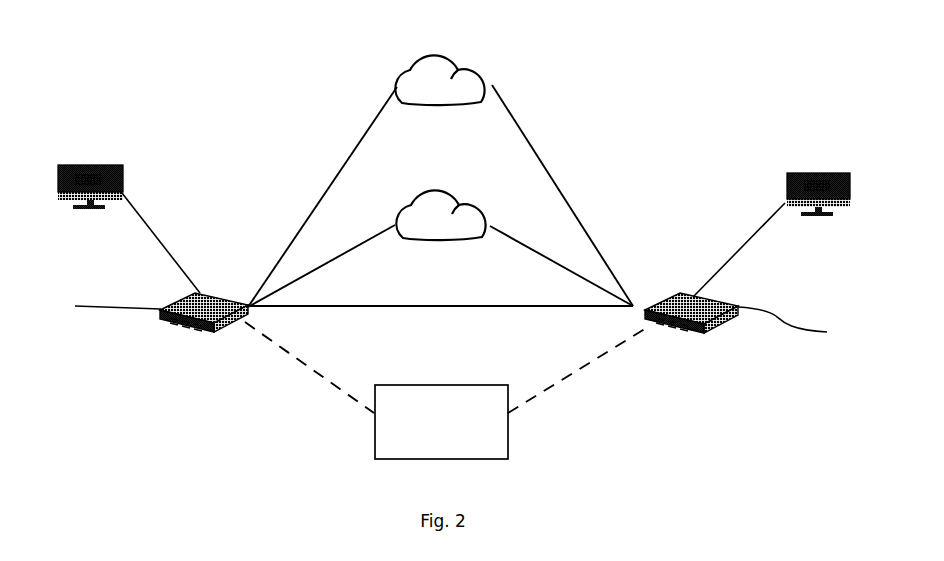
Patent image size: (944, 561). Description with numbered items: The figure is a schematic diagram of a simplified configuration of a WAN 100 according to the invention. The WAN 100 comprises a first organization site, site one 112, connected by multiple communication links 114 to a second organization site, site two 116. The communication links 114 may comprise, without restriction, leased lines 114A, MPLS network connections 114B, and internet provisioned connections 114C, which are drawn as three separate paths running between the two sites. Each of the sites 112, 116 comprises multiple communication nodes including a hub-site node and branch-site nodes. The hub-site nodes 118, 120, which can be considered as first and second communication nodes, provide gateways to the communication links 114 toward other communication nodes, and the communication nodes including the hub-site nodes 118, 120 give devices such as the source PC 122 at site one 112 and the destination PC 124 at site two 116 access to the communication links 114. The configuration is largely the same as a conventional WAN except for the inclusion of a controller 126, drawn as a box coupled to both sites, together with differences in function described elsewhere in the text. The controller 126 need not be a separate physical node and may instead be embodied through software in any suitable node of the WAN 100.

The WAN 100 is at (557, 84).
The first organization site 112 is at (201, 327).
The communication links 114 is at (313, 188).
The leased lines 114A is at (562, 306).
The MPLS network connections 114B is at (540, 253).
The internet provisioned connections 114C is at (531, 139).
The second organization site 116 is at (689, 327).
The hub-site node 118 is at (99, 311).
The hub-site node 120 is at (799, 323).
The source PC 122 is at (115, 229).
The destination PC 124 is at (779, 235).
The controller 126 is at (446, 390).